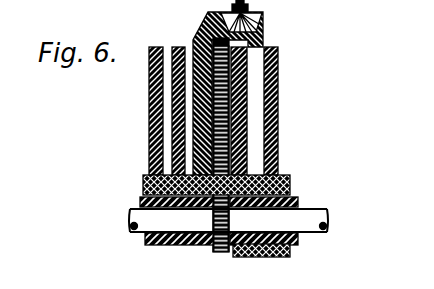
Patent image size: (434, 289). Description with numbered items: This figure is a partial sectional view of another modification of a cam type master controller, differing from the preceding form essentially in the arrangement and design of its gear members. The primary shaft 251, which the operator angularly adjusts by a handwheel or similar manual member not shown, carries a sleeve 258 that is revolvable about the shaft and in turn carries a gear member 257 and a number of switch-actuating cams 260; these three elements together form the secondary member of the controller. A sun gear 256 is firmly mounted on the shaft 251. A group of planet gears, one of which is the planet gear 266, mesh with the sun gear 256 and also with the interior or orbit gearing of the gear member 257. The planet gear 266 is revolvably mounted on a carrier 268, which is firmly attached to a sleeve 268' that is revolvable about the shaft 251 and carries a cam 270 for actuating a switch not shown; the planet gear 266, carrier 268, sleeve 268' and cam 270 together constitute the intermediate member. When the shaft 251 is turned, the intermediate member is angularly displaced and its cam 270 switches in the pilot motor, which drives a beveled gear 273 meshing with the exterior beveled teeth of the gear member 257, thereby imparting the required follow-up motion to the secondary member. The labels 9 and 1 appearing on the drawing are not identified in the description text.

The spark plug assembly 9 is at (180, 32).
The beveled gear 273 is at (258, 14).
The planet gear 266 is at (228, 46).
The electrode sleeve 1 is at (248, 77).
The gear member 257 is at (193, 91).
The switch-actuating cams 260 is at (166, 141).
The sleeve 258 is at (142, 198).
The cam 270 is at (279, 110).
The carrier 268 is at (290, 129).
The sun gear 256 is at (248, 163).
The sleeve 268' is at (242, 209).
The primary shaft 251 is at (318, 222).